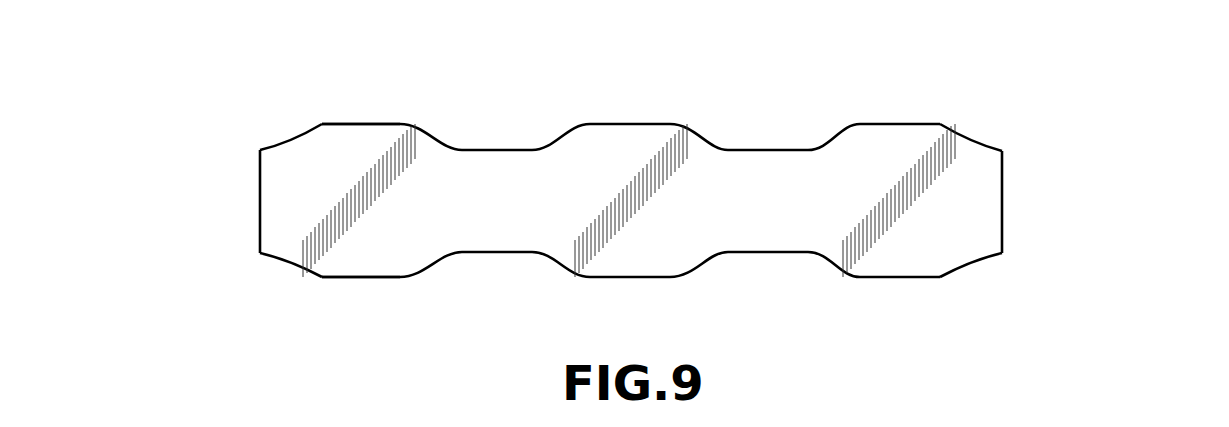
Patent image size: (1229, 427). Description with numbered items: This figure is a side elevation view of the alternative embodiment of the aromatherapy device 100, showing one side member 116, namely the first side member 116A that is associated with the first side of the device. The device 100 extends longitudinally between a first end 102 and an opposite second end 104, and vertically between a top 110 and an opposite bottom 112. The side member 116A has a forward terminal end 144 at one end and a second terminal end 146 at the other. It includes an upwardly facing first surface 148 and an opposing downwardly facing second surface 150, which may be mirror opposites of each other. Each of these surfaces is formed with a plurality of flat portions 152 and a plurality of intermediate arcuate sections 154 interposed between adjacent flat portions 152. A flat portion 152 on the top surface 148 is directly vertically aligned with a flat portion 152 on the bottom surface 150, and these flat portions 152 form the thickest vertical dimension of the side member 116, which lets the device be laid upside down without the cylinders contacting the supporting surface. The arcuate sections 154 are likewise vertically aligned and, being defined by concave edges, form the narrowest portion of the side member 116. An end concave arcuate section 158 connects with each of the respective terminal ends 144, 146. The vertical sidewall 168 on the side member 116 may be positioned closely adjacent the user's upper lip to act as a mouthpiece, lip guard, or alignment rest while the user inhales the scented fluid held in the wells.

The aromatherapy device 100 is at (630, 204).
The first end 102 is at (265, 200).
The second end 104 is at (994, 200).
The top 110 is at (580, 103).
The bottom 112 is at (801, 303).
The side member 116 is at (765, 89).
The first side member 116A is at (782, 162).
The forward terminal end 144 is at (261, 172).
The second terminal end 146 is at (1003, 189).
The first surface 148 is at (372, 125).
The second surface 150 is at (371, 280).
The flat portion 152 is at (347, 124).
The arcuate section 154 is at (493, 150).
The end concave arcuate section 158 is at (293, 142).
The vertical sidewall 168 is at (527, 210).